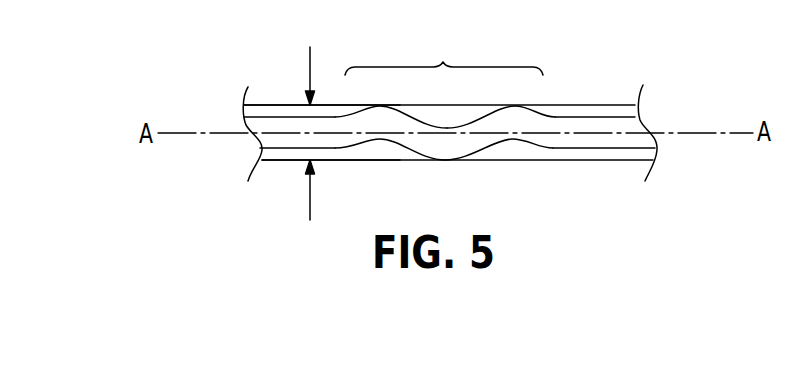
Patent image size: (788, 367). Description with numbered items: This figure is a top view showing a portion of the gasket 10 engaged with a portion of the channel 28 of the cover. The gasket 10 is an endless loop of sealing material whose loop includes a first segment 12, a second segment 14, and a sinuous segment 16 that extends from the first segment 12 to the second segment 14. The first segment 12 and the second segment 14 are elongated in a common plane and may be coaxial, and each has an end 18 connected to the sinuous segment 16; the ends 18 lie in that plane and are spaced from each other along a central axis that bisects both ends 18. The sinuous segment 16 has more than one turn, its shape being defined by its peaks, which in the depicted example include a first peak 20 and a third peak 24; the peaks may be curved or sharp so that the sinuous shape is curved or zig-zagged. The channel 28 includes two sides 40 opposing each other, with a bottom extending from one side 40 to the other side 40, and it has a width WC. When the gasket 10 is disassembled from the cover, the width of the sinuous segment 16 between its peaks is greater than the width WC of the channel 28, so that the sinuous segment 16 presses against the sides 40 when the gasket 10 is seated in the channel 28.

The gasket 10 is at (627, 122).
The first segment 12 is at (277, 140).
The second segment 14 is at (607, 142).
The sinuous segment 16 is at (444, 53).
The end 18 is at (330, 147).
The first peak 20 is at (378, 105).
The third peak 24 is at (510, 105).
The channel 28 is at (523, 152).
The side 40 is at (270, 105).
The width of the channel WC is at (307, 118).